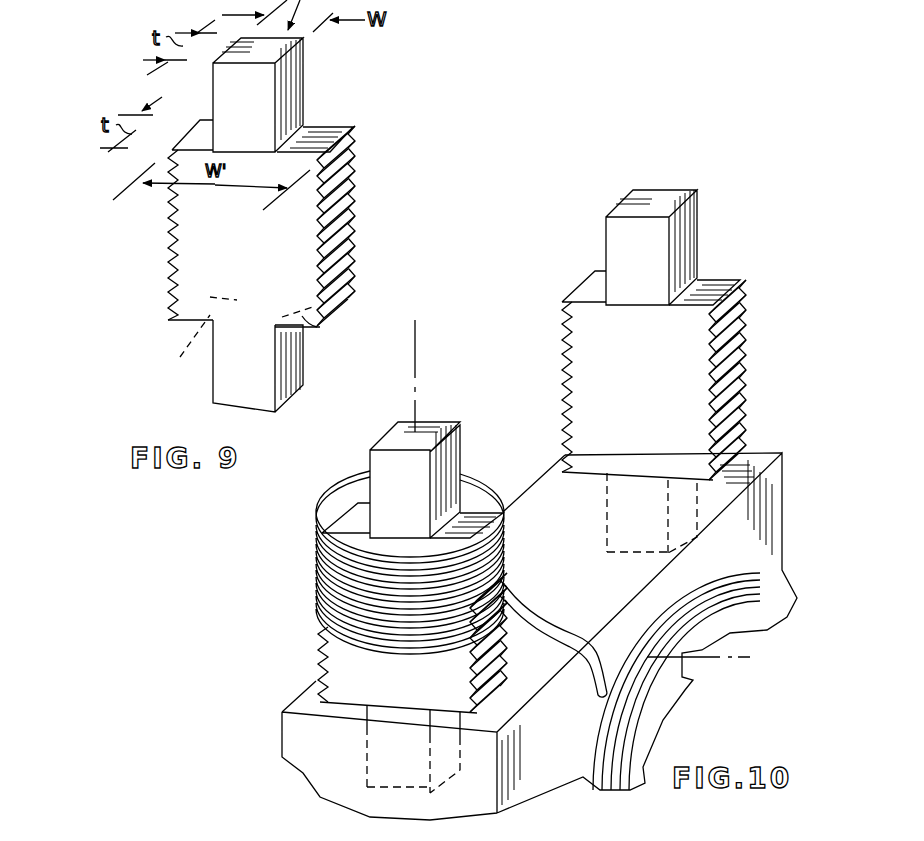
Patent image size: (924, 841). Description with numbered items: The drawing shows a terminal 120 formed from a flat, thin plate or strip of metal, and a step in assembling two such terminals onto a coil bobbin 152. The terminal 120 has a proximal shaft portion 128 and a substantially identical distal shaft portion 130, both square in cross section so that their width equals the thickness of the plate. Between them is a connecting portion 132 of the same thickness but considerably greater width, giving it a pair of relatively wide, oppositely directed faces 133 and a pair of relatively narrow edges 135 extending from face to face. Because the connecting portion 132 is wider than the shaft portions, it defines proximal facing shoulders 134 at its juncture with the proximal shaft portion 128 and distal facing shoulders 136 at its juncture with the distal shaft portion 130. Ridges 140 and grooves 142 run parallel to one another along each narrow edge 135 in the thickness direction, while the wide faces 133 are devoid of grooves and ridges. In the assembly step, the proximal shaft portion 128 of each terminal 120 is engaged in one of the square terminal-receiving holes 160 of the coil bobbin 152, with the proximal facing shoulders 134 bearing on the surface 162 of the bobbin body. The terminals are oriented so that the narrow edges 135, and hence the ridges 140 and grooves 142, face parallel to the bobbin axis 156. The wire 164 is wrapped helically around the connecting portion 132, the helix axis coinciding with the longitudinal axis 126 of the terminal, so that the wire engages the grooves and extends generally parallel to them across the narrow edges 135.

In FIG. 10, the terminal 120 is at (430, 414).
In FIG. 10, the longitudinal axis 126 is at (416, 355).
In FIG. 9, the proximal shaft portion 128 is at (293, 72).
In FIG. 10, the proximal shaft portion 128 is at (365, 776).
In FIG. 9, the distal shaft portion 130 is at (293, 367).
In FIG. 9, the connecting portion 132 is at (360, 188).
In FIG. 9, the faces 133 is at (222, 280).
In FIG. 9, the proximal facing shoulders 134 is at (197, 137).
In FIG. 10, the proximal facing shoulders 134 is at (343, 703).
In FIG. 9, the edges 135 is at (352, 250).
In FIG. 10, the edges 135 is at (558, 310).
In FIG. 9, the distal facing shoulders 136 is at (196, 343).
In FIG. 9, the ridges 140 is at (352, 141).
In FIG. 10, the ridges 140 is at (743, 340).
In FIG. 9, the grooves 142 is at (345, 168).
In FIG. 10, the grooves 142 is at (738, 365).
In FIG. 10, the coil bobbin 152 is at (765, 530).
In FIG. 10, the bobbin axis 156 is at (682, 665).
In FIG. 10, the terminal-receiving holes 160 is at (368, 736).
In FIG. 10, the surface 162 is at (540, 490).
In FIG. 10, the wire 164 is at (545, 622).